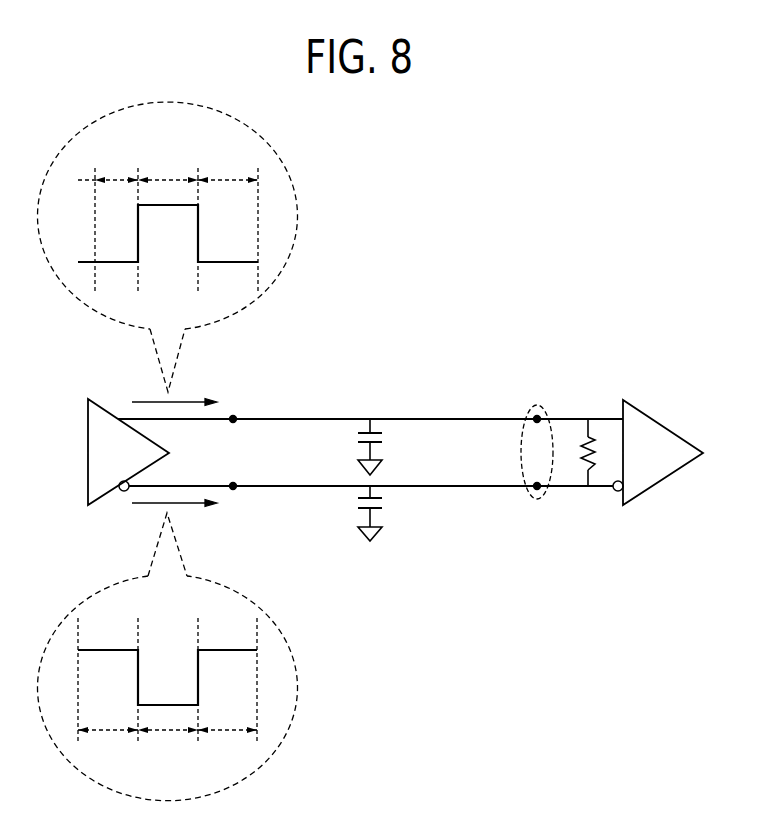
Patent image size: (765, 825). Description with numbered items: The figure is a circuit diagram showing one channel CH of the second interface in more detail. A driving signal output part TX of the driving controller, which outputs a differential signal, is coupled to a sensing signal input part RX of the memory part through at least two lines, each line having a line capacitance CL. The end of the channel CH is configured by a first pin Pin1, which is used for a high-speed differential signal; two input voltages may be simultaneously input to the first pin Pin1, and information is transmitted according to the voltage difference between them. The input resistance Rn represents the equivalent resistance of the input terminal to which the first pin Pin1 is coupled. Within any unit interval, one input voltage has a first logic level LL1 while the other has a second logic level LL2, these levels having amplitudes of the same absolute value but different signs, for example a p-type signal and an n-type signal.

The driving signal output part TX is at (128, 452).
The sensing signal input part RX is at (663, 452).
The channel CH is at (599, 290).
The line capacitance CL is at (383, 480).
The first pin Pin1 is at (537, 405).
The input resistance Rn is at (575, 452).
The first logic level LL1 is at (210, 205).
The second logic level LL2 is at (210, 705).